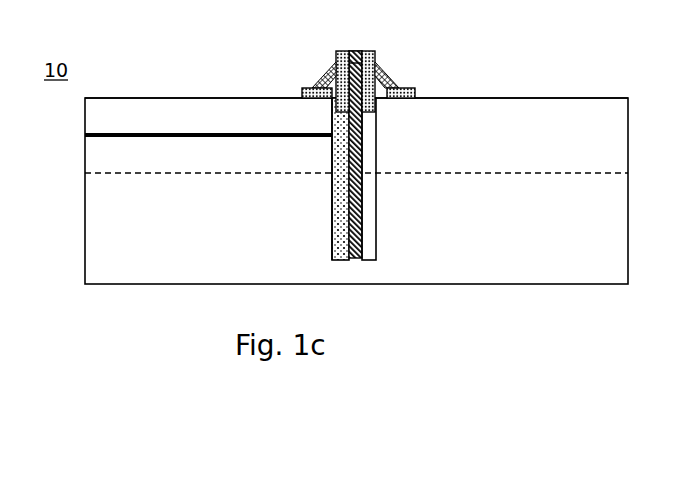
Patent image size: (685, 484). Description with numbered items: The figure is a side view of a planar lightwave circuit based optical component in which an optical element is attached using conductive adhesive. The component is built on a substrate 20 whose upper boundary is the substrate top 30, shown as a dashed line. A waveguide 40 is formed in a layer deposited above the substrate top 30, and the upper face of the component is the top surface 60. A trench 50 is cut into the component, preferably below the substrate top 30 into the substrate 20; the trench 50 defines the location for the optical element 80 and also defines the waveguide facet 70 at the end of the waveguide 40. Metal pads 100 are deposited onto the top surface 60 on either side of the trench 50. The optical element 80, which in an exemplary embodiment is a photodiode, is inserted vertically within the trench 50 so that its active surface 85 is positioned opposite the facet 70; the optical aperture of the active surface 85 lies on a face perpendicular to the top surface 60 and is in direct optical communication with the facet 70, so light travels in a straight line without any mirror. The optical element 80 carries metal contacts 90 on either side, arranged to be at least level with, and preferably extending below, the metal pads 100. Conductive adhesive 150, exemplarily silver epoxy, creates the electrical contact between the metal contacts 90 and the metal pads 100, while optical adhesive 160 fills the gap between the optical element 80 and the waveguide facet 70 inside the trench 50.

The substrate 20 is at (628, 234).
The substrate top 30 is at (97, 174).
The waveguide 40 is at (155, 134).
The trench 50 is at (340, 245).
The top surface 60 is at (521, 98).
The waveguide facet 70 is at (331, 139).
The optical element 80 is at (355, 50).
The active surface 85 is at (345, 165).
The metal contacts 90 is at (336, 56).
The metal pads 100 is at (302, 92).
The conductive adhesive 150 is at (316, 73).
The optical adhesive 160 is at (332, 240).